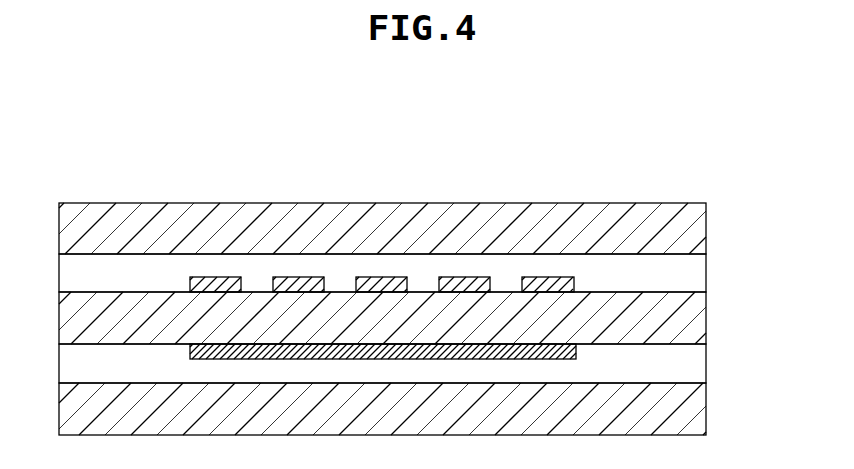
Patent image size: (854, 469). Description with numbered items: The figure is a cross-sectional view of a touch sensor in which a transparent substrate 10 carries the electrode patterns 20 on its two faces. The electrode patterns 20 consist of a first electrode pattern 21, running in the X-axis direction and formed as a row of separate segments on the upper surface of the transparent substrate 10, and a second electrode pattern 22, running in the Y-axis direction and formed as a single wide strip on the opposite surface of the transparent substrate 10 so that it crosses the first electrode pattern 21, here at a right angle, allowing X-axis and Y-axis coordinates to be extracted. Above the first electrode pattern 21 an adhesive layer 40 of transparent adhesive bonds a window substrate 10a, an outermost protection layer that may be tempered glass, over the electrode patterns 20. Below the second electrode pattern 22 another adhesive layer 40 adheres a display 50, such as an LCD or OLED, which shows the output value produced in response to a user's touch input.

The window substrate 10a is at (690, 226).
The adhesive layer 40 is at (690, 276).
The transparent substrate 10 is at (690, 321).
The display 50 is at (690, 416).
The electrode patterns 20 is at (383, 226).
The first electrode pattern 21 is at (381, 278).
The second electrode pattern 22 is at (472, 355).